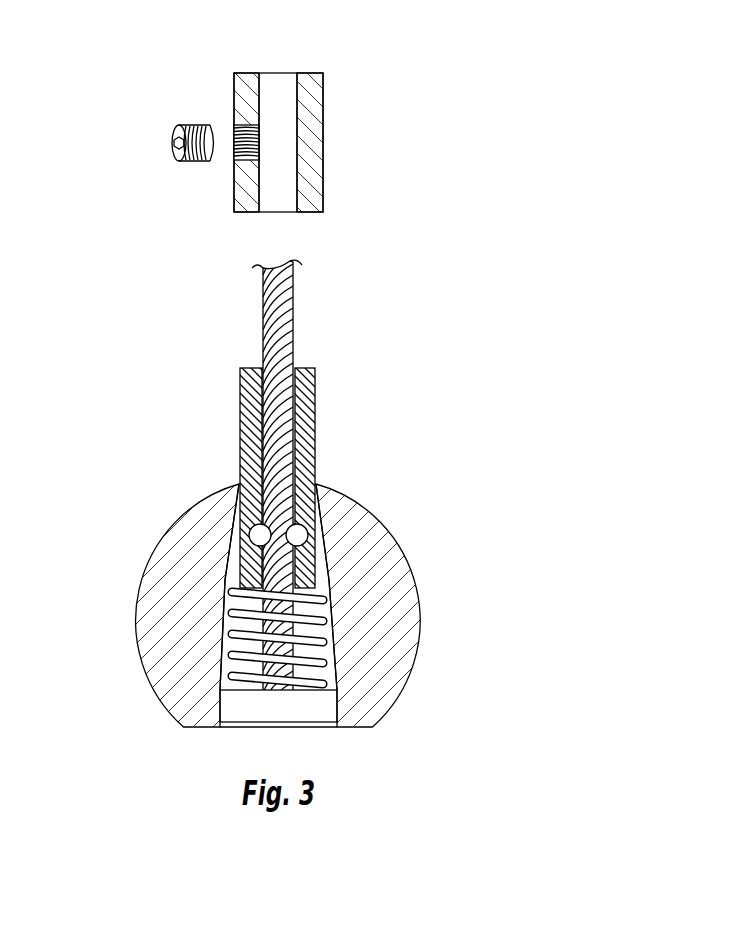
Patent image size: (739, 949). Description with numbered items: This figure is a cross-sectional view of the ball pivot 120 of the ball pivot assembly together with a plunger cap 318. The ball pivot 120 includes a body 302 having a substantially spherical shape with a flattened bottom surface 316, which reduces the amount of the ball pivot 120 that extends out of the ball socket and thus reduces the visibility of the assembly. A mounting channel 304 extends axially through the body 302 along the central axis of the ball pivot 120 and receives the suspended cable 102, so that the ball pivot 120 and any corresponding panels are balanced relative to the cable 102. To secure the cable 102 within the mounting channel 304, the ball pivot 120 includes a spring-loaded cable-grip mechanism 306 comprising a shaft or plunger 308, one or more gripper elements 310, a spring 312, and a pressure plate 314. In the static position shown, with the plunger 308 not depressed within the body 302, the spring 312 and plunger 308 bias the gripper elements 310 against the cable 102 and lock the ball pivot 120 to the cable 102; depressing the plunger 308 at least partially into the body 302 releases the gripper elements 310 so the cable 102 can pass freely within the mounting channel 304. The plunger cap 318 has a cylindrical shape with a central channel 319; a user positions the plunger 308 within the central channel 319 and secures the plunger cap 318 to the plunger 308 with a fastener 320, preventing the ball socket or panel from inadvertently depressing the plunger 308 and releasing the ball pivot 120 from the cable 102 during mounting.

The cable 102 is at (263, 322).
The ball pivot 120 is at (317, 542).
The body 302 is at (153, 567).
The mounting channel 304 is at (300, 355).
The spring-loaded cable-grip mechanism 306 is at (366, 560).
The plunger 308 is at (316, 433).
The gripper elements 310 is at (306, 532).
The spring 312 is at (322, 590).
The pressure plate 314 is at (328, 705).
The flattened bottom surface 316 is at (208, 729).
The plunger cap 318 is at (322, 129).
The central channel 319 is at (288, 70).
The fastener 320 is at (173, 143).